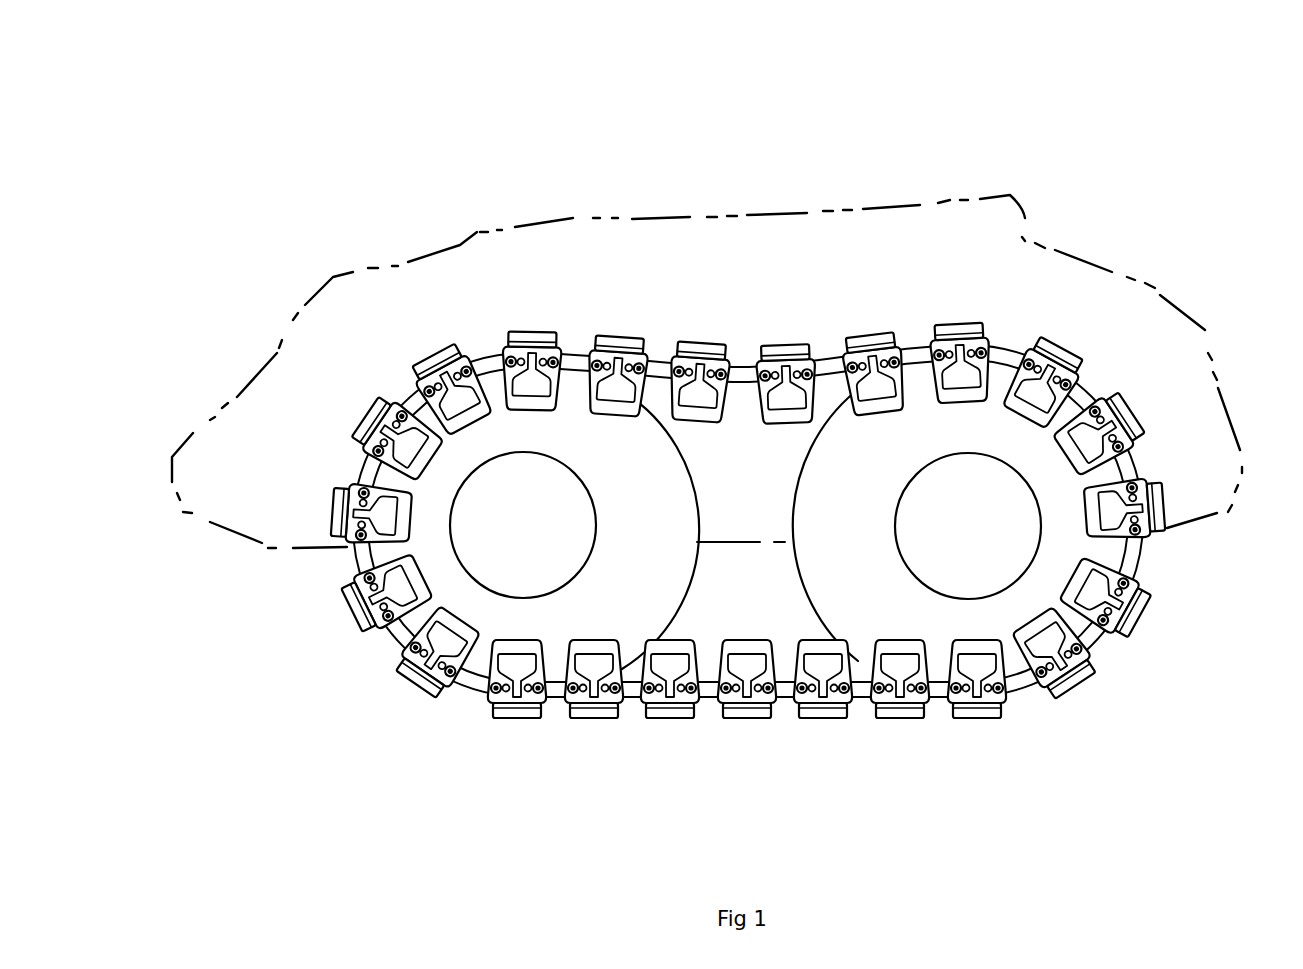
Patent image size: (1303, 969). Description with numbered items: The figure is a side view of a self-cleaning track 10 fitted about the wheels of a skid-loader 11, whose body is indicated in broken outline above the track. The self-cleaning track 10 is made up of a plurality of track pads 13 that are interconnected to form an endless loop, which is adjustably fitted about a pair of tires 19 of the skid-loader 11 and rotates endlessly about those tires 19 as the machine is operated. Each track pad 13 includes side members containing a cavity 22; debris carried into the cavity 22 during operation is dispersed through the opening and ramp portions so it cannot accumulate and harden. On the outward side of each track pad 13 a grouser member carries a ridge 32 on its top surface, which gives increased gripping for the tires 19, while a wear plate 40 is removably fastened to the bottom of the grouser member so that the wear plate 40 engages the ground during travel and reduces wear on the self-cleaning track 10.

The self-cleaning track 10 is at (810, 502).
The skid-loader 11 is at (918, 200).
The track pad 13 is at (720, 343).
The tires 19 is at (833, 552).
The cavity 22 is at (900, 665).
The ridge 32 is at (975, 707).
The wear plate 40 is at (1060, 693).